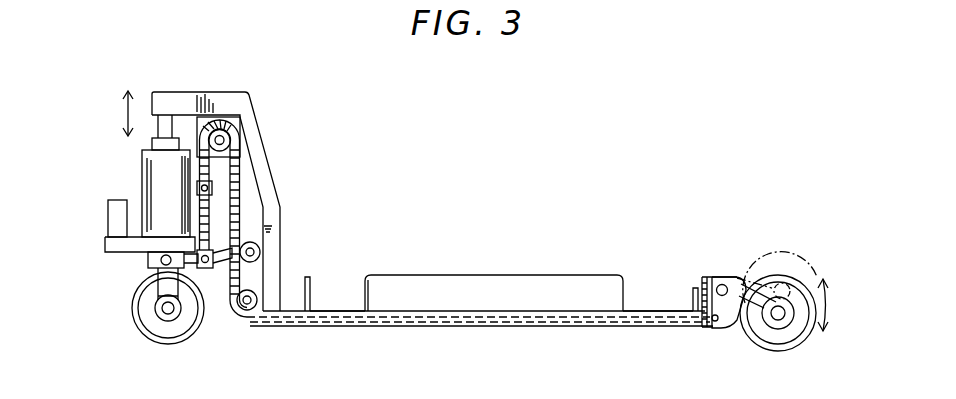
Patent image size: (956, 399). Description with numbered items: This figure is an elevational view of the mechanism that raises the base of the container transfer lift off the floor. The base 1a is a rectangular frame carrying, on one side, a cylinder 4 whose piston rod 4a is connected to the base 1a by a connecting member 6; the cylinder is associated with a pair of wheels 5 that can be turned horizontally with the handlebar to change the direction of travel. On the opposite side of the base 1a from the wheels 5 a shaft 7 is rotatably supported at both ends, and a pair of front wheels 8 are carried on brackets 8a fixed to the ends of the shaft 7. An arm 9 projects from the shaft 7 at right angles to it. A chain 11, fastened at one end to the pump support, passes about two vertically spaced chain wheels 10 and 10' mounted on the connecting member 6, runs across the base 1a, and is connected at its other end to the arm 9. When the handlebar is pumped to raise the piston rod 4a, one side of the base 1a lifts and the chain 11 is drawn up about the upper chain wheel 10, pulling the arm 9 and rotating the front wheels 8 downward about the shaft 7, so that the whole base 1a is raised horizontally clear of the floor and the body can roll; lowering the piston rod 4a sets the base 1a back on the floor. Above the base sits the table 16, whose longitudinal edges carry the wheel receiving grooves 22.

The base 1a is at (637, 330).
The cylinder 4 is at (156, 178).
The piston rod 4a is at (173, 132).
The wheels 5 is at (152, 327).
The connecting member 6 is at (270, 188).
The shaft 7 is at (722, 284).
The front wheels 8 is at (783, 350).
The brackets 8a is at (743, 298).
The arm 9 is at (726, 322).
The chain wheel 10 is at (252, 130).
The chain wheel 10' is at (245, 326).
The chain 11 is at (228, 283).
The table 16 is at (505, 280).
The wheel receiving grooves 22 is at (340, 293).